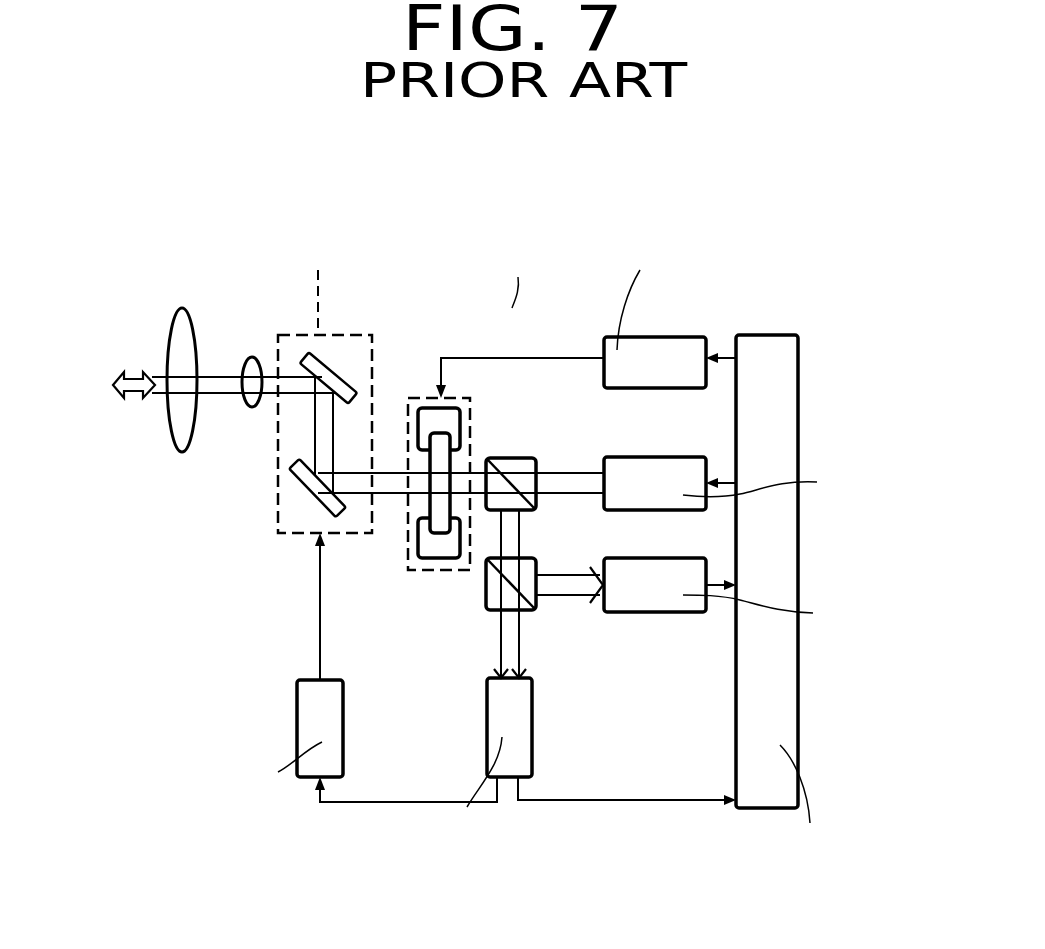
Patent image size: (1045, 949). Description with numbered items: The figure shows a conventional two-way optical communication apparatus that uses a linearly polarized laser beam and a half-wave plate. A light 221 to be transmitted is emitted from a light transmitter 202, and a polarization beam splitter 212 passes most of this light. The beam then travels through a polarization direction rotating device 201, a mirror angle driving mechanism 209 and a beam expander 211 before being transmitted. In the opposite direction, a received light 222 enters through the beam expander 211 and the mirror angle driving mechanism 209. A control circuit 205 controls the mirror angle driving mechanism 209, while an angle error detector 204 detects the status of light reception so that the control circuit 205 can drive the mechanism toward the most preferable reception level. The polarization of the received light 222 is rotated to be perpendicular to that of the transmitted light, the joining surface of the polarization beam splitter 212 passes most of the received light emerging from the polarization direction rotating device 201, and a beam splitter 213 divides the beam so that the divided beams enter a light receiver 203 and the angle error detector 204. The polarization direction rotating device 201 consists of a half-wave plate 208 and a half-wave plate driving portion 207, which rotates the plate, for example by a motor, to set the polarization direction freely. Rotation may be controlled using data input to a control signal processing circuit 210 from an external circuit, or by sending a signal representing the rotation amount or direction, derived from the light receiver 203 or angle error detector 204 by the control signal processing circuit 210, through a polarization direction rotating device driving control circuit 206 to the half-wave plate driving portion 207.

The polarization direction rotating device 201 is at (470, 402).
The light transmitter 202 is at (644, 457).
The light receiver 203 is at (667, 612).
The angle error detector 204 is at (533, 723).
The control circuit 205 is at (297, 738).
The polarization direction rotating device driving control circuit 206 is at (652, 337).
The half-wave plate driving portion 207 is at (418, 427).
The half-wave plate 208 is at (430, 500).
The mirror angle driving mechanism 209 is at (338, 335).
The control signal processing circuit 210 is at (773, 335).
The beam expander 211 is at (249, 410).
The polarization beam splitter 212 is at (527, 458).
The beam splitter 213 is at (487, 606).
The light to be transmitted 221 is at (123, 374).
The received light 222 is at (143, 396).